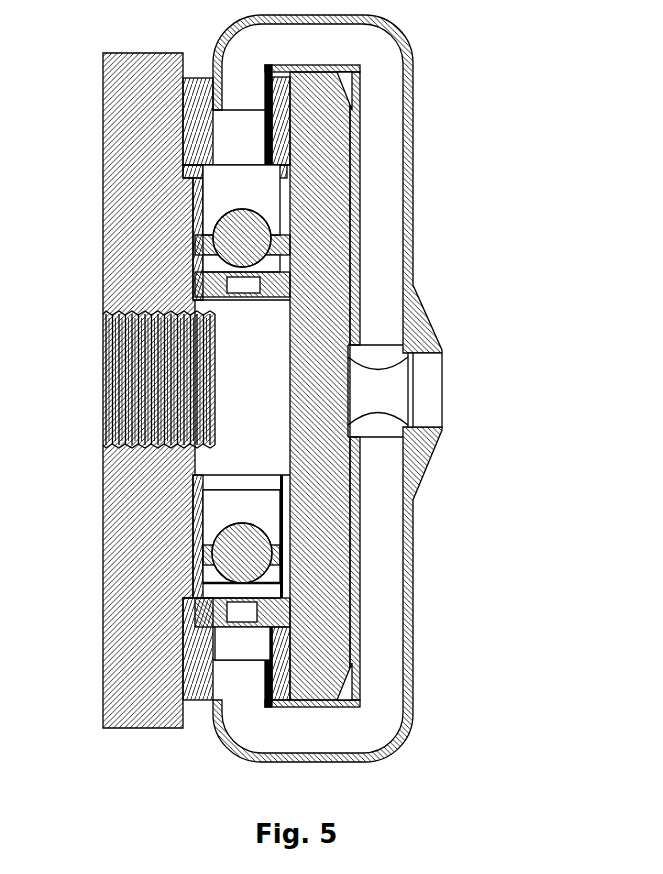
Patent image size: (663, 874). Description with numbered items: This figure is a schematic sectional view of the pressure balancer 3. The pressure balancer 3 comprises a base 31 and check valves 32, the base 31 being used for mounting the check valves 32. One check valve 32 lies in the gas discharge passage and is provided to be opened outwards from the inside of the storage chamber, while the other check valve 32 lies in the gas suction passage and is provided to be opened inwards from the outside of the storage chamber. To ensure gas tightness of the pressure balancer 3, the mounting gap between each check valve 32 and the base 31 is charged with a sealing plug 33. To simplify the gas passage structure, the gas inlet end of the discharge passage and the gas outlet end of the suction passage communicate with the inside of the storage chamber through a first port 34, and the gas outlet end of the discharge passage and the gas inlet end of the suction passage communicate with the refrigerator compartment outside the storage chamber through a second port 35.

The pressure balancer 3 is at (446, 92).
The base 31 is at (138, 53).
The check valve 32 is at (205, 238).
The sealing plug 33 is at (178, 117).
The first port 34 is at (105, 378).
The second port 35 is at (442, 392).